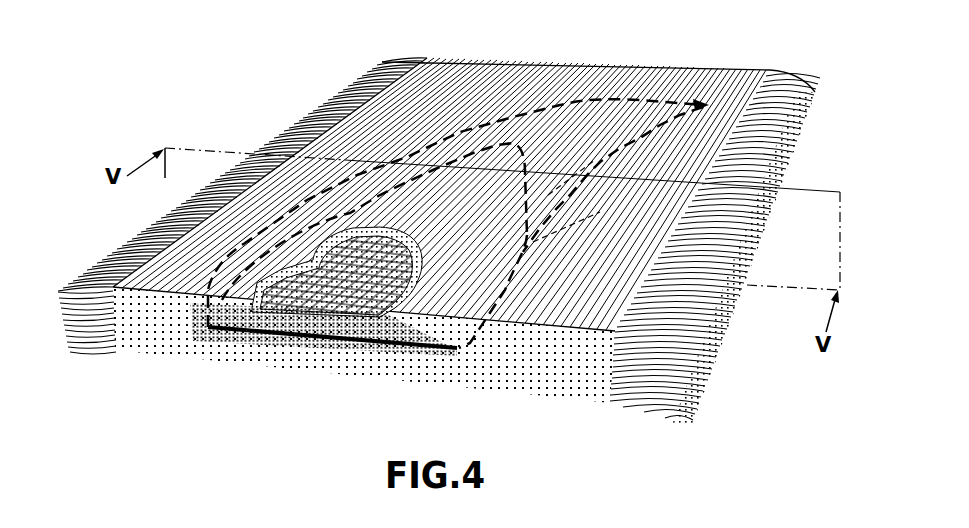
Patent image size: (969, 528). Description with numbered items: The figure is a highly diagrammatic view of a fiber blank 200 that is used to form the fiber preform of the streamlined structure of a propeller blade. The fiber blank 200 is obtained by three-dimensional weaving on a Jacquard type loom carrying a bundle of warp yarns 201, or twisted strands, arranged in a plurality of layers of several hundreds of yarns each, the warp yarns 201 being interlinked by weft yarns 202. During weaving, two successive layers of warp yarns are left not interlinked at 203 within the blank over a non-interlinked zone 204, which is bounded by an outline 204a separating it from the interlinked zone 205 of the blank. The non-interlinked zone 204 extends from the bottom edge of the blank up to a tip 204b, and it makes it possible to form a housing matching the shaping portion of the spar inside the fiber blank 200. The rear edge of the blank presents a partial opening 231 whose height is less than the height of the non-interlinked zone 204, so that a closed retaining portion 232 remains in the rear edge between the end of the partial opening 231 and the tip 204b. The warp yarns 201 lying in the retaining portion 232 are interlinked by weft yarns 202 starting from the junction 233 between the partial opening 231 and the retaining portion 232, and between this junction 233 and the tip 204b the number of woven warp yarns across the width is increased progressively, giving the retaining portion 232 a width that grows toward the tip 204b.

The fiber blank 200 is at (310, 275).
The warp yarns 201 is at (663, 66).
The weft yarns 202 is at (730, 250).
The non-interlinking location 203 is at (278, 350).
The non-interlinked zone 204 is at (477, 226).
The outline 204a is at (440, 157).
The tip of the non-interlinked zone 204b is at (513, 118).
The interlinked zone 205 is at (580, 147).
The partial opening 231 is at (515, 268).
The retaining portion 232 is at (614, 152).
The junction 233 is at (640, 218).